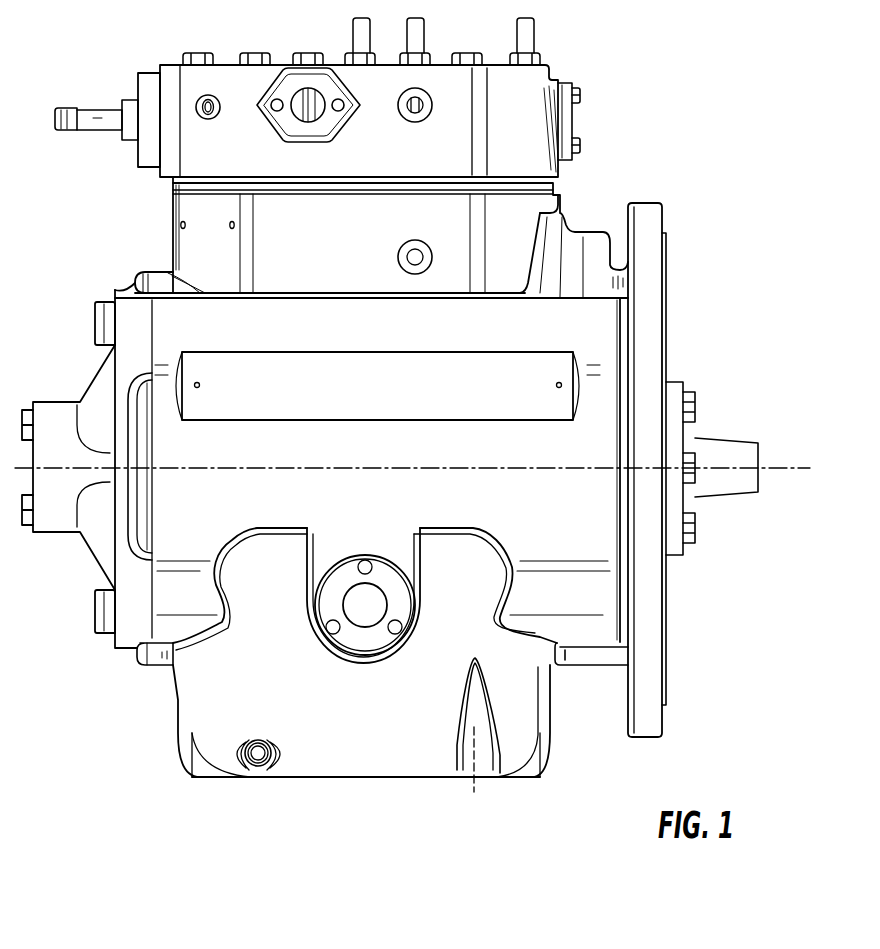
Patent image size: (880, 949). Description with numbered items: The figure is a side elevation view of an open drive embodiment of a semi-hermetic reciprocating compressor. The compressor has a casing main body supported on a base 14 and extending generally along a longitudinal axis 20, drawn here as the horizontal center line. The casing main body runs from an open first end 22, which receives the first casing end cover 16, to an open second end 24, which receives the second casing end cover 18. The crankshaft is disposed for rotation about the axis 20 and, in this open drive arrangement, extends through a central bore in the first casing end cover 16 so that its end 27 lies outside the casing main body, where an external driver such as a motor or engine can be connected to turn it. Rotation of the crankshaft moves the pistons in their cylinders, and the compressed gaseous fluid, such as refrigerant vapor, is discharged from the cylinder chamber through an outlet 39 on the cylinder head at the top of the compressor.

The base 14 is at (527, 777).
The first casing end cover 16 is at (662, 637).
The second casing end cover 18 is at (110, 372).
The longitudinal axis 20 is at (767, 466).
The open first end 22 is at (622, 590).
The open second end 24 is at (148, 525).
The end of the crankshaft 27 is at (720, 497).
The outlet 39 is at (322, 123).